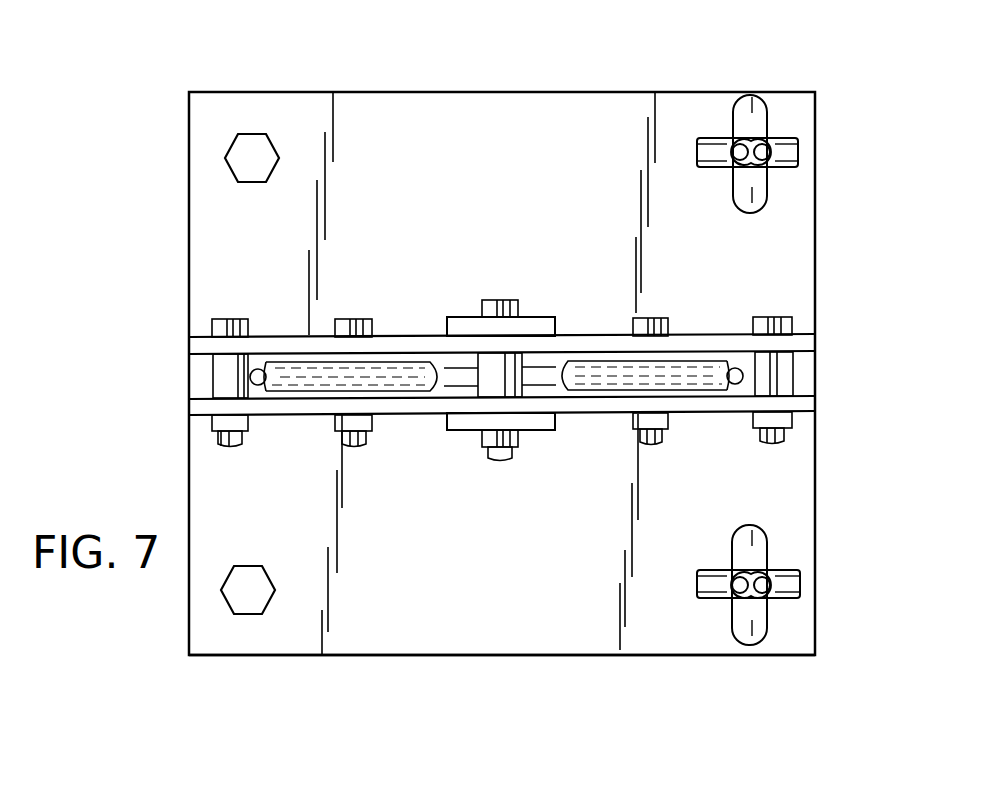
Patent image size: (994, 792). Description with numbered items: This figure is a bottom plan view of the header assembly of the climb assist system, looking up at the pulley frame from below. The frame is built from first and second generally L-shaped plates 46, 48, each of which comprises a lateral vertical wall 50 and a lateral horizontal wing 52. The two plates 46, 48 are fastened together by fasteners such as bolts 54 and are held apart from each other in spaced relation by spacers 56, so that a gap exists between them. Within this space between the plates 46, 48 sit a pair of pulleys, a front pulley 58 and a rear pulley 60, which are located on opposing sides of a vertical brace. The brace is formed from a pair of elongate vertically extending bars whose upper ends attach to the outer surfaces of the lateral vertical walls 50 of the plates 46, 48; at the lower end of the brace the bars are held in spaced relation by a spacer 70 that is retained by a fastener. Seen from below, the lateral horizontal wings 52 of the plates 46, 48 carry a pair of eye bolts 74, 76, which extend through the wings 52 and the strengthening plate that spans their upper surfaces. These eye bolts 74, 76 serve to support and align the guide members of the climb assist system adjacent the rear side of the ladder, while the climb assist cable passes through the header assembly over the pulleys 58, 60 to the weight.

The first L-shaped plate 46 is at (553, 625).
The second L-shaped plate 48 is at (585, 118).
The lateral vertical wall 50 is at (410, 337).
The lateral horizontal wing 52 is at (434, 108).
The bolts 54 is at (218, 326).
The spacers 56 is at (214, 380).
The front pulley 58 is at (300, 392).
The rear pulley 60 is at (692, 391).
The spacer 70 is at (503, 382).
The eye bolt 74 is at (747, 637).
The eye bolt 76 is at (750, 100).